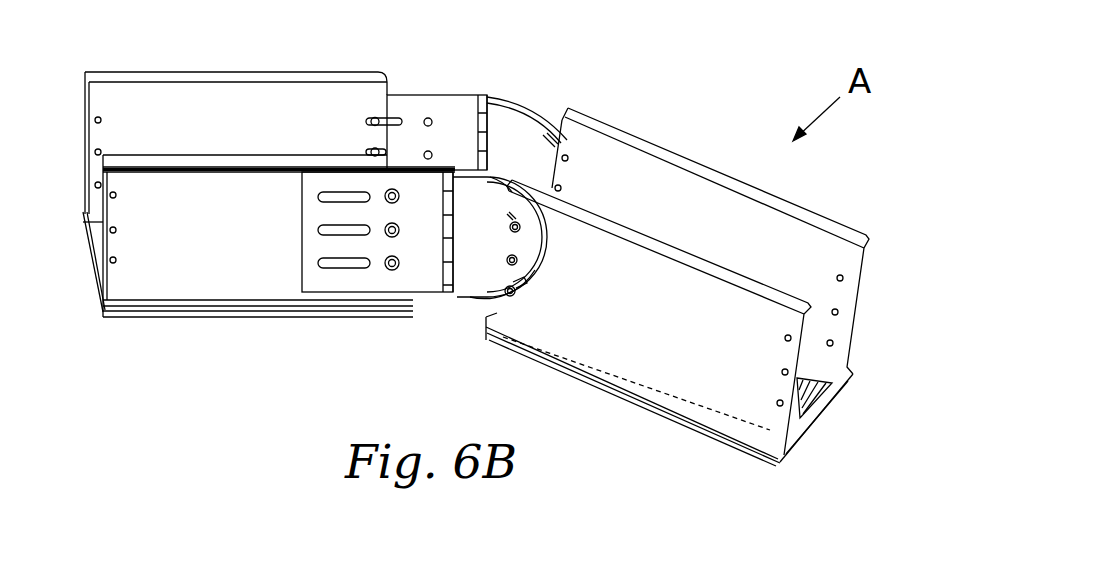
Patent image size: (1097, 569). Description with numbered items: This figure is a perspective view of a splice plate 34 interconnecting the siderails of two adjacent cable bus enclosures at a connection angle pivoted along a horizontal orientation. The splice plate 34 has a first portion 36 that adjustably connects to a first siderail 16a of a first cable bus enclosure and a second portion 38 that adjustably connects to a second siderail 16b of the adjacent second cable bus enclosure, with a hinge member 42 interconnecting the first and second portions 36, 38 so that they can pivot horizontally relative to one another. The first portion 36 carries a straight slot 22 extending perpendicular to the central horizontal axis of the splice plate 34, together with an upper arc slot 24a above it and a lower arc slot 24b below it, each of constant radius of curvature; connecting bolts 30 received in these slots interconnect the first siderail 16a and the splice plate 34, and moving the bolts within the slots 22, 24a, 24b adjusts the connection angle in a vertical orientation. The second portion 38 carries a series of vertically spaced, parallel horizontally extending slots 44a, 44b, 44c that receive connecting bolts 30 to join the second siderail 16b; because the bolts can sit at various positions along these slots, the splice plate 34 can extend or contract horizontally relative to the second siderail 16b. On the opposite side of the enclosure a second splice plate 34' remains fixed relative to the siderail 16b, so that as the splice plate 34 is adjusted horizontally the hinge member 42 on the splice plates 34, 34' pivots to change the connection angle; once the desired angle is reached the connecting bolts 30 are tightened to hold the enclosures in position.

The first siderail 16a is at (672, 188).
The second siderail 16b is at (166, 112).
The straight slot 22 is at (519, 248).
The upper arc slot 24a is at (522, 231).
The lower arc slot 24b is at (525, 277).
The connecting bolts 30 is at (395, 258).
The splice plate 34 is at (458, 277).
The splice plate 34' is at (477, 105).
The first portion 36 is at (501, 304).
The second portion 38 is at (349, 293).
The hinge member 42 is at (447, 188).
The horizontally extending slot 44a is at (362, 123).
The horizontally extending slot 44b is at (365, 148).
The horizontally extending slot 44c is at (335, 262).